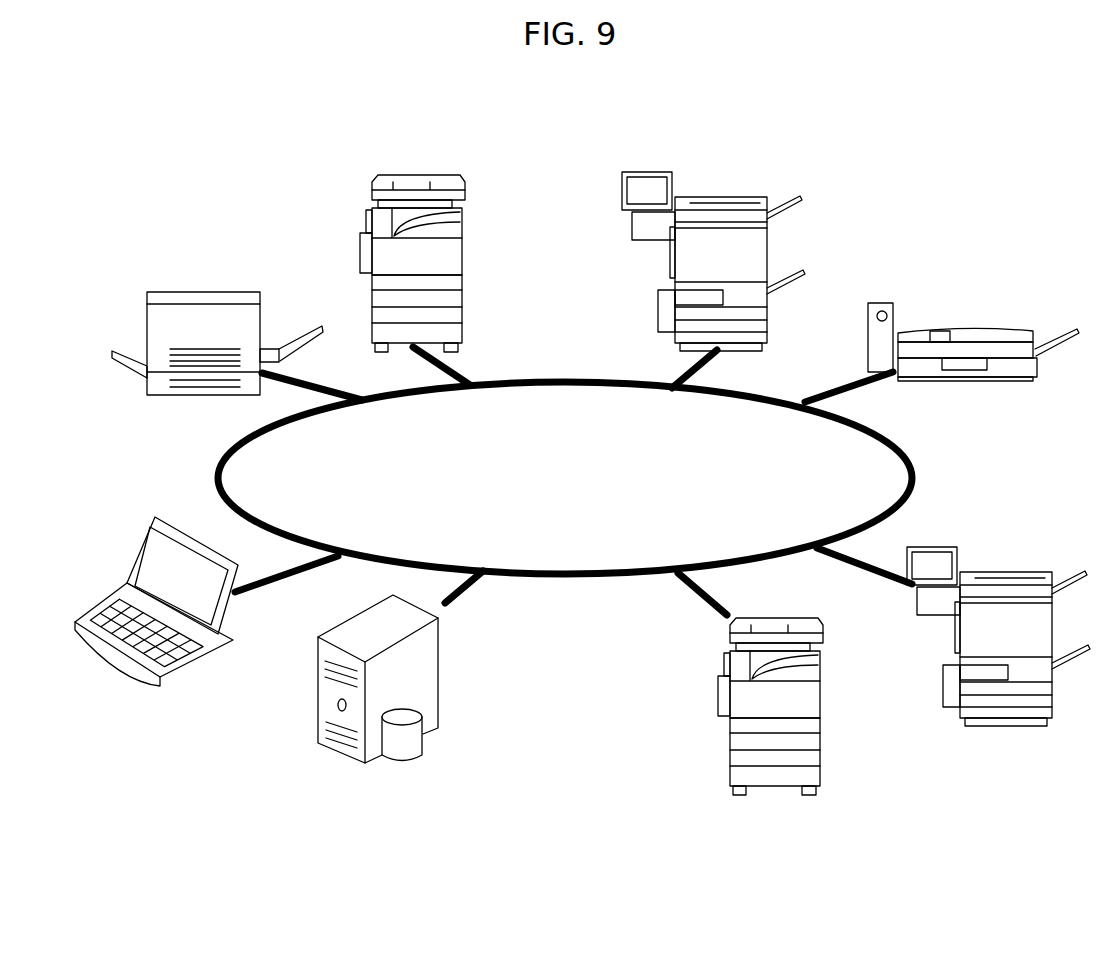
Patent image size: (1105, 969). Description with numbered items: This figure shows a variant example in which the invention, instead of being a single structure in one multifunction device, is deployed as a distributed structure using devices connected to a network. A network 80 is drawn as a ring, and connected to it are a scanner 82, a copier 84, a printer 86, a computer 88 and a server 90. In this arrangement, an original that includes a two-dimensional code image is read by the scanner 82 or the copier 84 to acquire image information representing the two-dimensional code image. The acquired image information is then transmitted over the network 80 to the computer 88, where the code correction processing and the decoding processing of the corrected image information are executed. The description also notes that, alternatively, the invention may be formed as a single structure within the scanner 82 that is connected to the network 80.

The network 80 is at (567, 386).
The scanner 82 is at (973, 408).
The copier 84 is at (422, 142).
The printer 86 is at (203, 236).
The computer 88 is at (153, 707).
The server 90 is at (377, 793).